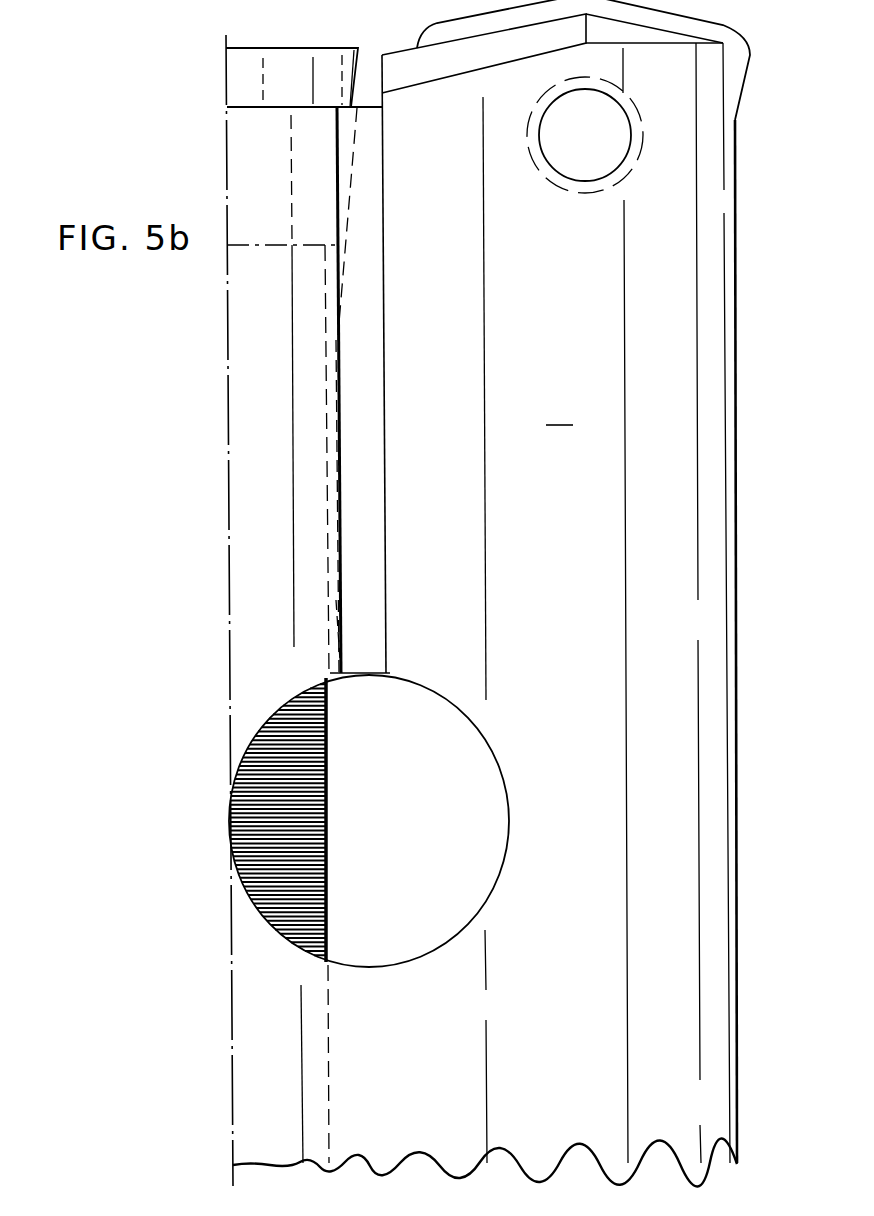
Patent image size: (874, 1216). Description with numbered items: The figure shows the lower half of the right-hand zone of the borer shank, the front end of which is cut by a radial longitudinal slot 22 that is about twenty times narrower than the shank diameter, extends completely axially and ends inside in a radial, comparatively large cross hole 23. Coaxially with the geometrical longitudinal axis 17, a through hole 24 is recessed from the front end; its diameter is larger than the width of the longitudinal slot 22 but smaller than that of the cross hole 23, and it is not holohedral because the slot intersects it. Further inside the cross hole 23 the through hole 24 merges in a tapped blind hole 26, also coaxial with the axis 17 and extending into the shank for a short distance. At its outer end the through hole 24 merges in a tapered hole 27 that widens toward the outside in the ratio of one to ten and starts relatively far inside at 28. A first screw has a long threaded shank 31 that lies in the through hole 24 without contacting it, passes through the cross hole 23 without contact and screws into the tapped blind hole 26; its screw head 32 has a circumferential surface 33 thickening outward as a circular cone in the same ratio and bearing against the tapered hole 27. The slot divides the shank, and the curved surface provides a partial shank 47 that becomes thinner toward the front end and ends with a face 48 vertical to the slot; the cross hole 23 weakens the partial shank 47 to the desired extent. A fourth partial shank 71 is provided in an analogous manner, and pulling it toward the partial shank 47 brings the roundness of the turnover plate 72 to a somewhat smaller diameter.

The geometrical longitudinal axis 17 is at (227, 422).
The radial longitudinal slot 22 is at (384, 445).
The cross hole 23 is at (489, 752).
The through hole 24 is at (338, 628).
The tapped blind hole 26 is at (333, 1124).
The tapered hole 27 is at (352, 180).
The start of the tapered hole 28 is at (326, 338).
The threaded shank 31 is at (330, 768).
The screw head 32 is at (247, 72).
The circumferential surface 33 is at (279, 72).
The partial shank 47 is at (276, 611).
The face 48 is at (299, 107).
The fourth partial shank 71 is at (485, 600).
The turnover plate 72 is at (707, 30).